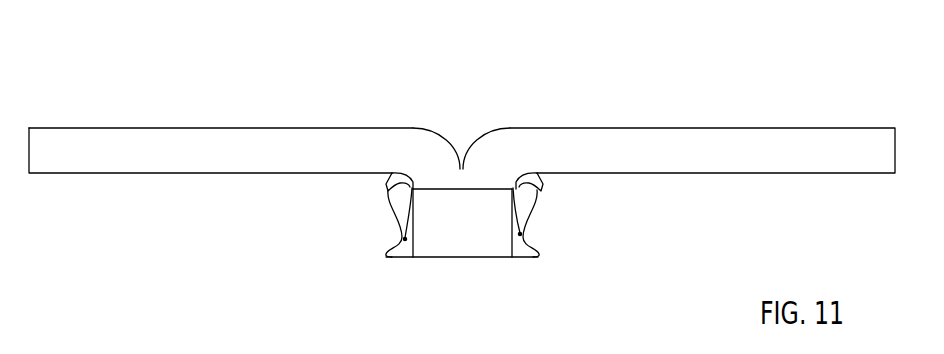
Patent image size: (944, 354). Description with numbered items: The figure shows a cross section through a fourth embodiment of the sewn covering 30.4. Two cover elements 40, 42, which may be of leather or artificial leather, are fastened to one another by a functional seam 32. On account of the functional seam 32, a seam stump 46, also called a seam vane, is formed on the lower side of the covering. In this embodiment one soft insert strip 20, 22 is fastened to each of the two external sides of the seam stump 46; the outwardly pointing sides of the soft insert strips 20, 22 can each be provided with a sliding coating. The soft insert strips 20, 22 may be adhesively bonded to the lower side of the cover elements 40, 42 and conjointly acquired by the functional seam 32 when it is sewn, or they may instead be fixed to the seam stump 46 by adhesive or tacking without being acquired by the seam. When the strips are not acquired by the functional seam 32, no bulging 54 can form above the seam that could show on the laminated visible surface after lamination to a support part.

The sewn covering 30.4 is at (70, 104).
The cover element 42 is at (185, 150).
The cover element 40 is at (709, 148).
The functional seam 32 is at (460, 257).
The soft insert strip 20 is at (415, 189).
The soft insert strip 22 is at (520, 232).
The bulging 54 is at (391, 172).
The seam stump 46 is at (480, 223).